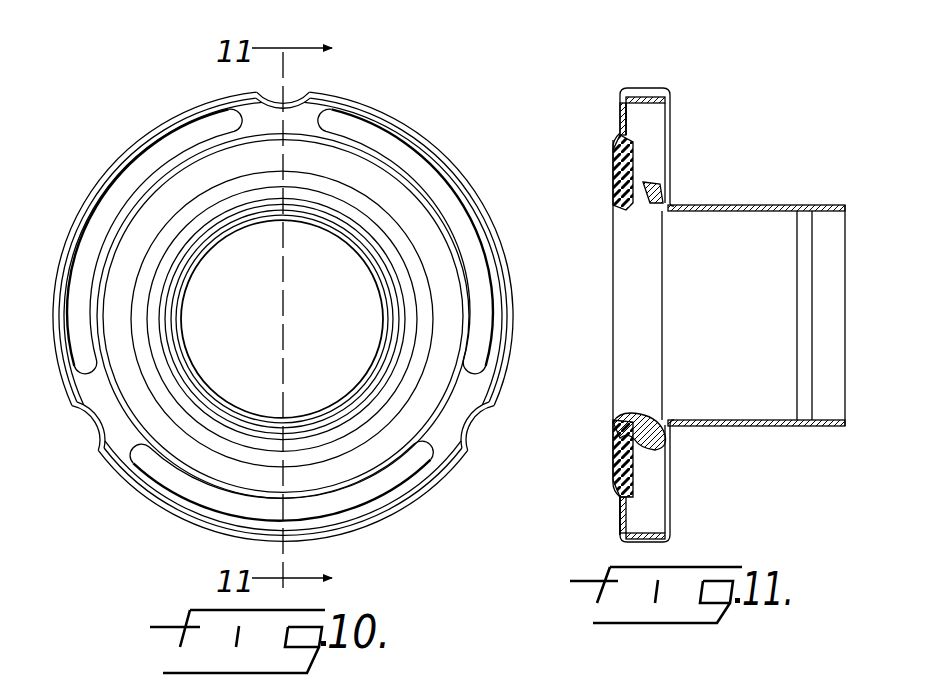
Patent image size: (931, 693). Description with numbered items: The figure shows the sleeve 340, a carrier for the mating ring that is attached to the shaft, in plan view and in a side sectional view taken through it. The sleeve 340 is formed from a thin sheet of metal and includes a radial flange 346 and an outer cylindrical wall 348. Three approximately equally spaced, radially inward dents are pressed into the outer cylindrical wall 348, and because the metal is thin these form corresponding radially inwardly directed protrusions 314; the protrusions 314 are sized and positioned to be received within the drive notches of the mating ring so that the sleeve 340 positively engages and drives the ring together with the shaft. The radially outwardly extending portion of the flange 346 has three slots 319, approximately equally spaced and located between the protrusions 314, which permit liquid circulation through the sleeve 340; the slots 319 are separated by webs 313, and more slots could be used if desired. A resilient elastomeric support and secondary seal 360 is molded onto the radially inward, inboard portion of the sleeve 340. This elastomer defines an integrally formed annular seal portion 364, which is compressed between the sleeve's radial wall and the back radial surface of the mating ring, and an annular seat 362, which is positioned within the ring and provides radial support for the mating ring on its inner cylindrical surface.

In FIG. 10, the cylindrical sleeve 340 is at (150, 120).
In FIG. 11, the cylindrical sleeve 340 is at (745, 430).
In FIG. 10, the webs 313 is at (486, 401).
In FIG. 11, the webs 313 is at (620, 122).
In FIG. 10, the protrusions 314 is at (318, 97).
In FIG. 11, the protrusions 314 is at (650, 96).
In FIG. 10, the slots 319 is at (58, 185).
In FIG. 11, the slots 319 is at (620, 515).
In FIG. 11, the radial flange 346 is at (613, 172).
In FIG. 10, the outer cylindrical wall 348 is at (412, 124).
In FIG. 11, the outer cylindrical wall 348 is at (650, 548).
In FIG. 11, the resilient elastomeric support and secondary seal 360 is at (646, 148).
In FIG. 11, the annular seat 362 is at (648, 190).
In FIG. 11, the annular seal portion 364 is at (626, 468).